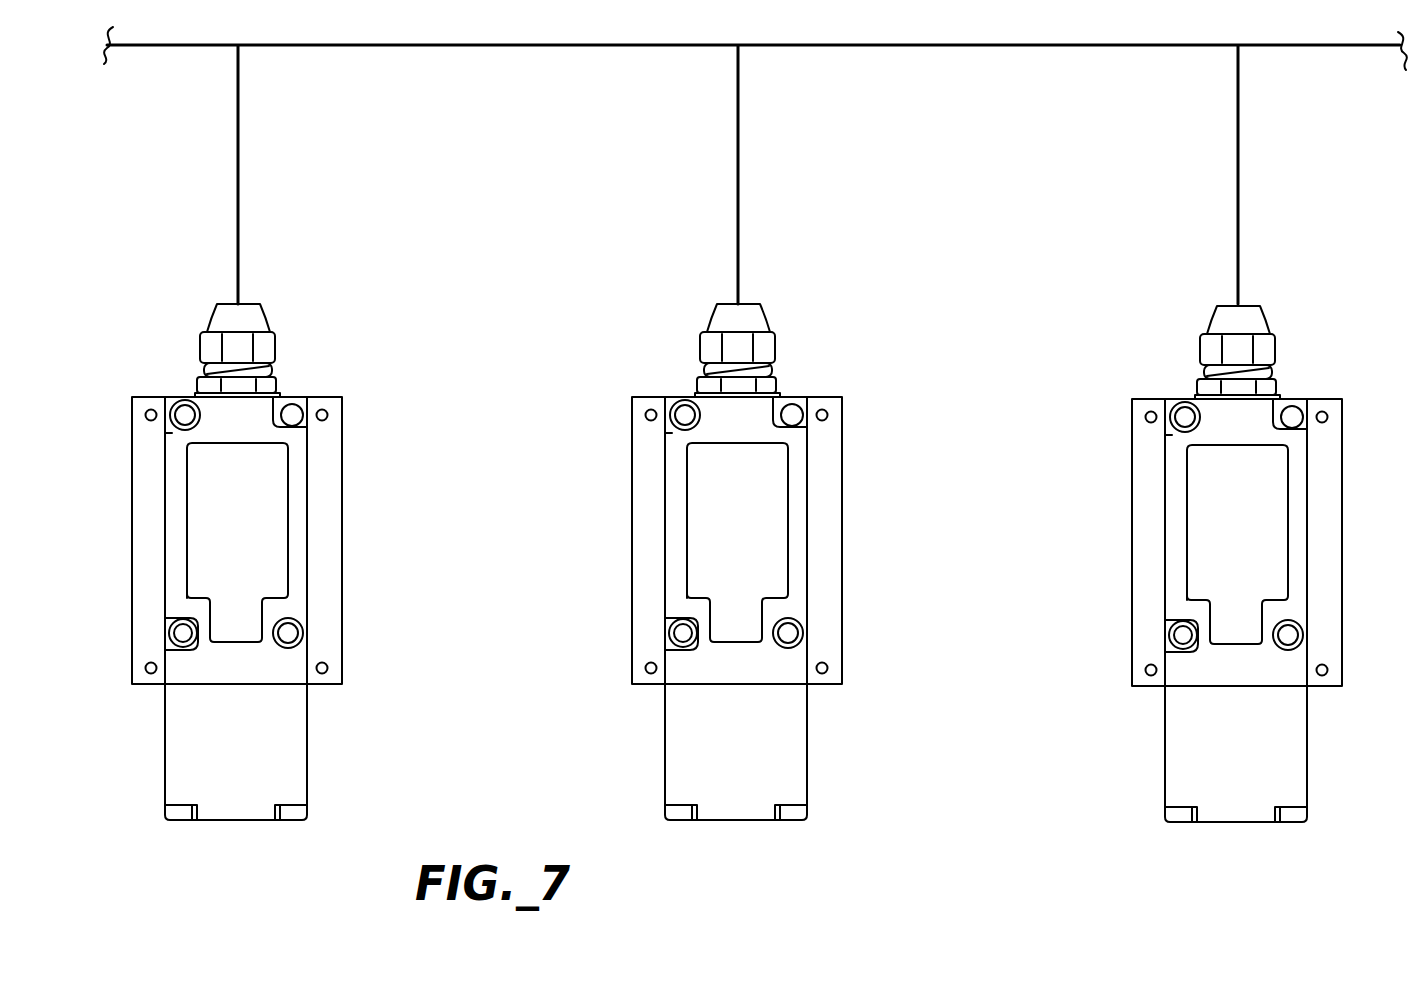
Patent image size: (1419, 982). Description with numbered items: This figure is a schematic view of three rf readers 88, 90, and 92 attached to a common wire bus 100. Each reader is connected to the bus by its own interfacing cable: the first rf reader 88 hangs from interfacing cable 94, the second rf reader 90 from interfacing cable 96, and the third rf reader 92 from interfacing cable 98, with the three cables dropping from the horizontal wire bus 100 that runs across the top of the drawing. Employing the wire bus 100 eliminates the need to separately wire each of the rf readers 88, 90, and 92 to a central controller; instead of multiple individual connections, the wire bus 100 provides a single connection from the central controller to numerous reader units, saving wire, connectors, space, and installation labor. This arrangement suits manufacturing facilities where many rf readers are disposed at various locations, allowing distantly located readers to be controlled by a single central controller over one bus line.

The rf reader 88 is at (307, 533).
The rf reader 90 is at (766, 562).
The rf reader 92 is at (1266, 564).
The interfacing cable 94 is at (240, 148).
The interfacing cable 96 is at (740, 150).
The interfacing cable 98 is at (1240, 155).
The wire bus 100 is at (1008, 47).